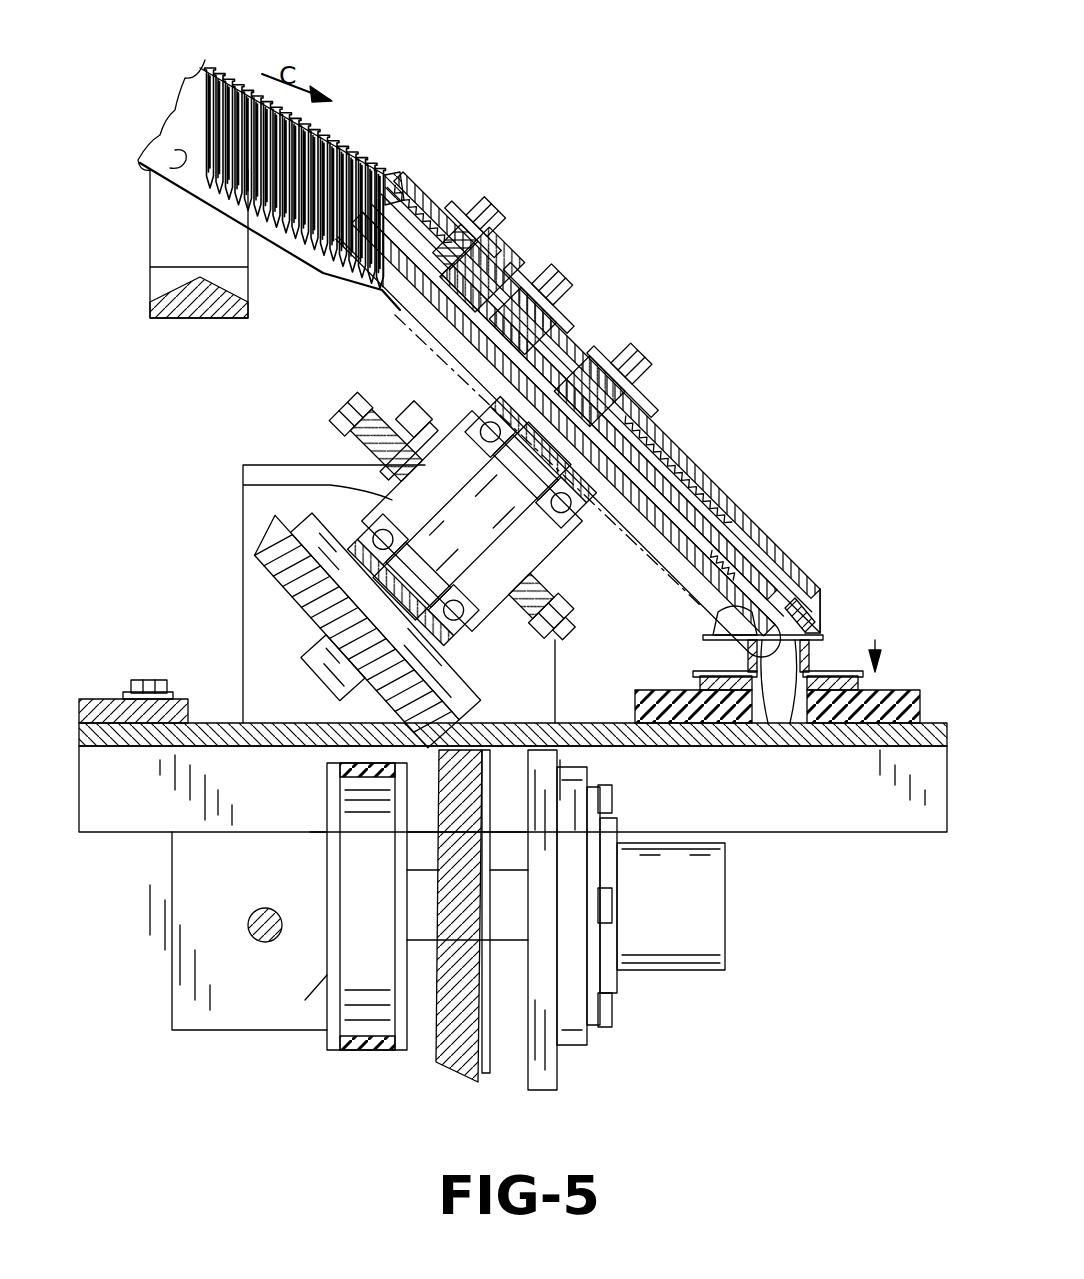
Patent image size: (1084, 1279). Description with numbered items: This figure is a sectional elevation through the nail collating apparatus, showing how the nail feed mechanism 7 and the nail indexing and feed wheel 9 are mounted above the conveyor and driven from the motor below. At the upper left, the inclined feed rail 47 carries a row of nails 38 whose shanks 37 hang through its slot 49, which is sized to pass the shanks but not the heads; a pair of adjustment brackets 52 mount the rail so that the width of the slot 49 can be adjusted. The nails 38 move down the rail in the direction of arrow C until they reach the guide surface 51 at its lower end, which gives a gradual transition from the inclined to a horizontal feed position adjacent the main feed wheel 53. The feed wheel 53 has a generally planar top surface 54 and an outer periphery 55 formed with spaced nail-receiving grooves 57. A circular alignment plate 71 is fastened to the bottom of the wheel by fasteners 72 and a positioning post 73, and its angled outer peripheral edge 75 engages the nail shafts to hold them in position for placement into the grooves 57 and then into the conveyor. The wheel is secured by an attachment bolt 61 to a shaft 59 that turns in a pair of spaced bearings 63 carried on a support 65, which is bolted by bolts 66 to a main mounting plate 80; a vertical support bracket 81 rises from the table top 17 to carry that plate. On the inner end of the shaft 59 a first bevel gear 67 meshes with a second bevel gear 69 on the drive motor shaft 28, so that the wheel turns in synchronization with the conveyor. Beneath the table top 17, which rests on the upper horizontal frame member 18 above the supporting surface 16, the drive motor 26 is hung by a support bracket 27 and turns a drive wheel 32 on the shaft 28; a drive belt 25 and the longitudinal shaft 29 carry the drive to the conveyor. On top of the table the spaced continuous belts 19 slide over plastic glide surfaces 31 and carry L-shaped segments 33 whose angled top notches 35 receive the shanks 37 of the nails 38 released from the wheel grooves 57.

The nail feed mechanism 7 is at (165, 73).
The nail indexing and feed wheel 9 is at (348, 247).
The supporting surface 16 is at (110, 723).
The table top 17 is at (215, 723).
The upper horizontal frame member 18 is at (132, 822).
The continuous belts 19 is at (730, 690).
The drive belt 25 is at (350, 1052).
The drive motor 26 is at (705, 903).
The support bracket 27 is at (556, 1090).
The drive shaft 28 is at (418, 895).
The shaft 29 is at (252, 925).
The glide surfaces 31 is at (882, 690).
The drive wheel 32 is at (325, 1000).
The L-shaped segments 33 is at (710, 672).
The notches 35 is at (735, 615).
The shanks 37 is at (205, 145).
The nails 38 is at (195, 108).
The feed rail 47 is at (192, 75).
The slot 49 is at (172, 176).
The guide surface 51 is at (395, 172).
The adjustment brackets 52 is at (162, 240).
The main feed wheel 53 is at (611, 402).
The top surface 54 is at (609, 432).
The outer periphery 55 is at (421, 215).
The nail-receiving grooves 57 is at (830, 625).
The shaft 59 is at (333, 668).
The attachment bolt 61 is at (614, 389).
The bearings 63 is at (471, 520).
The support 65 is at (472, 521).
The bolts 66 is at (475, 516).
The first bevel gear 67 is at (323, 633).
The second bevel gear 69 is at (448, 1065).
The circular alignment plate 71 is at (566, 434).
The fasteners 72 is at (679, 498).
The positioning post 73 is at (472, 247).
The angled outer peripheral edge 75 is at (818, 610).
The main mounting plate 80 is at (351, 414).
The vertical support bracket 81 is at (262, 605).